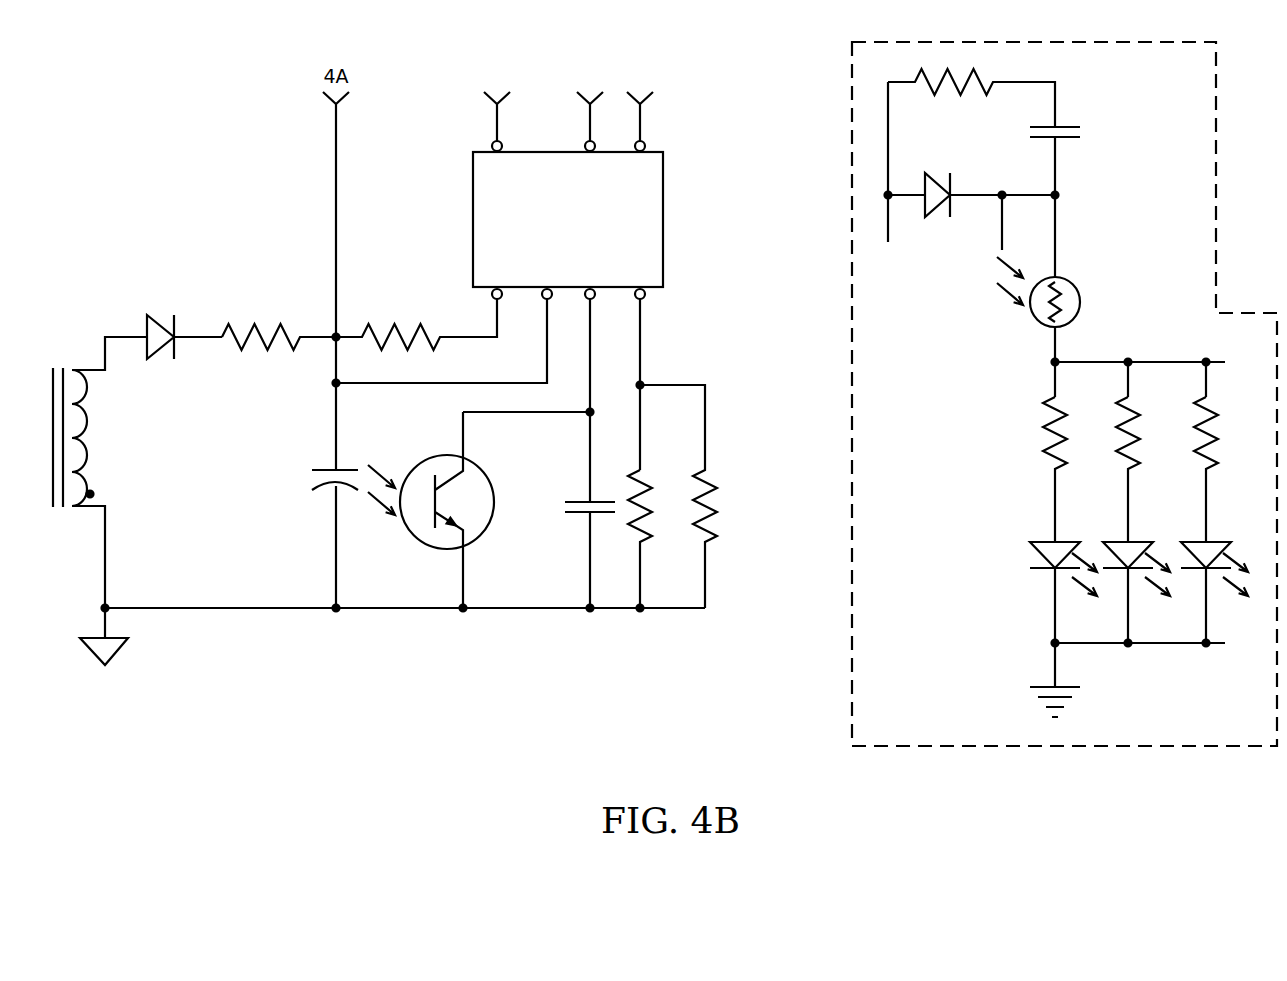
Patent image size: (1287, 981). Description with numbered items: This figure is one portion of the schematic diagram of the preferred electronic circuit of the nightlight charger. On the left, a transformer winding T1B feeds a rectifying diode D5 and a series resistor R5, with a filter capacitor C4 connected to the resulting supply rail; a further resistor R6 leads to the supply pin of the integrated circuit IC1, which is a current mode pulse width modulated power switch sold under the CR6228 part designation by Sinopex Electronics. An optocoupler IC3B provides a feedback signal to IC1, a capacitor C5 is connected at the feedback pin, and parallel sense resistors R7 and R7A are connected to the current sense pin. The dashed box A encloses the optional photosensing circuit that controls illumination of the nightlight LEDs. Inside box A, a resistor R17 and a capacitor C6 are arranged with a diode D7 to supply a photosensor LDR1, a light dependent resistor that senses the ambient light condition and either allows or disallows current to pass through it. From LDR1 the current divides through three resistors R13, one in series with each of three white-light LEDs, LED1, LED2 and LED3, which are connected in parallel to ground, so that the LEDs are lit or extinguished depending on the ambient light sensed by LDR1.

The transformer secondary winding T1B is at (100, 472).
The diode FR107 D5 is at (183, 312).
The resistor 10R R5 is at (279, 335).
The resistor 1K R6 is at (416, 336).
The capacitor 10uF/50V C4 is at (296, 481).
The integrated circuit IC1 is at (539, 336).
The optocoupler PC817 IC3B is at (479, 508).
The capacitor 472P/25V C5 is at (554, 508).
The resistor 5.1R R7 is at (661, 539).
The resistor 5.6R R7A is at (700, 496).
The Box A is at (873, 747).
The resistor 22R R17 is at (971, 143).
The capacitor 102P/50V C6 is at (1102, 177).
The diode SR240 D7 is at (972, 198).
The photosensor LDR1 is at (1065, 327).
The resistor 3K R13 is at (1106, 467).
The LED LED1 is at (1046, 592).
The LED LED2 is at (1120, 592).
The LED LED3 is at (1197, 592).